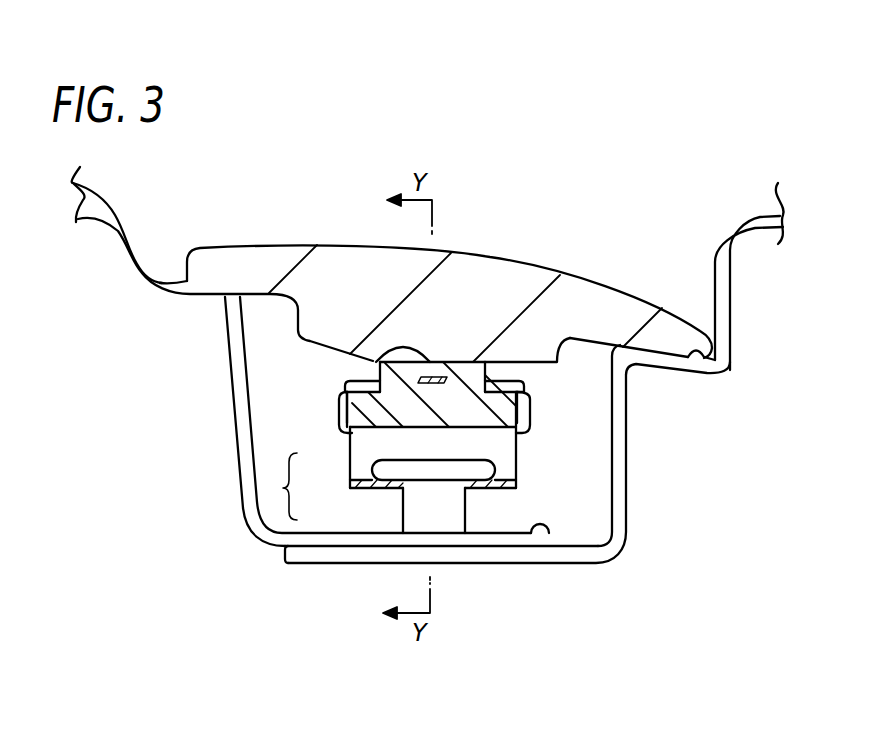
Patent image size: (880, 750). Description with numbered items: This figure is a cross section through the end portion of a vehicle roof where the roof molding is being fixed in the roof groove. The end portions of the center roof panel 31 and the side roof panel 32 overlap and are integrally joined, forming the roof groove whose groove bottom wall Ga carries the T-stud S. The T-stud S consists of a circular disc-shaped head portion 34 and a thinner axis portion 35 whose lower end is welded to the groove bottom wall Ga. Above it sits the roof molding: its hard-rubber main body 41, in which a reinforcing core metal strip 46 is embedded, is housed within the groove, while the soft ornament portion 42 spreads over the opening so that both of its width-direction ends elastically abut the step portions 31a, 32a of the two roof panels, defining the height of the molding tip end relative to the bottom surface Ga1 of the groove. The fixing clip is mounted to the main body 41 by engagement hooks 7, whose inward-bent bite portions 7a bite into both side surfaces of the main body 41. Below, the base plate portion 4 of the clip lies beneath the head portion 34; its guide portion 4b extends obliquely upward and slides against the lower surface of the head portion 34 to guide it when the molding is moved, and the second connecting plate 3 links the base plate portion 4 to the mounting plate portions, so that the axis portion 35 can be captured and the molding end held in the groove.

The second connecting plate 3 is at (510, 460).
The base plate portion 4 is at (528, 488).
The guide portion 4b is at (481, 488).
The engagement hook 7 is at (339, 420).
The bite portion 7a is at (346, 381).
The center roof panel 31 is at (225, 350).
The step portion 31a is at (177, 279).
The side roof panel 32 is at (633, 505).
The step portion 32a is at (713, 363).
The head portion 34 is at (373, 472).
The axis portion 35 is at (407, 502).
The main body 41 is at (483, 423).
The ornament portion 42 is at (490, 267).
The reinforcing core metal strip 46 is at (374, 361).
The T-stud S is at (283, 486).
The groove bottom wall Ga is at (357, 563).
The bottom surface Ga1 is at (543, 547).